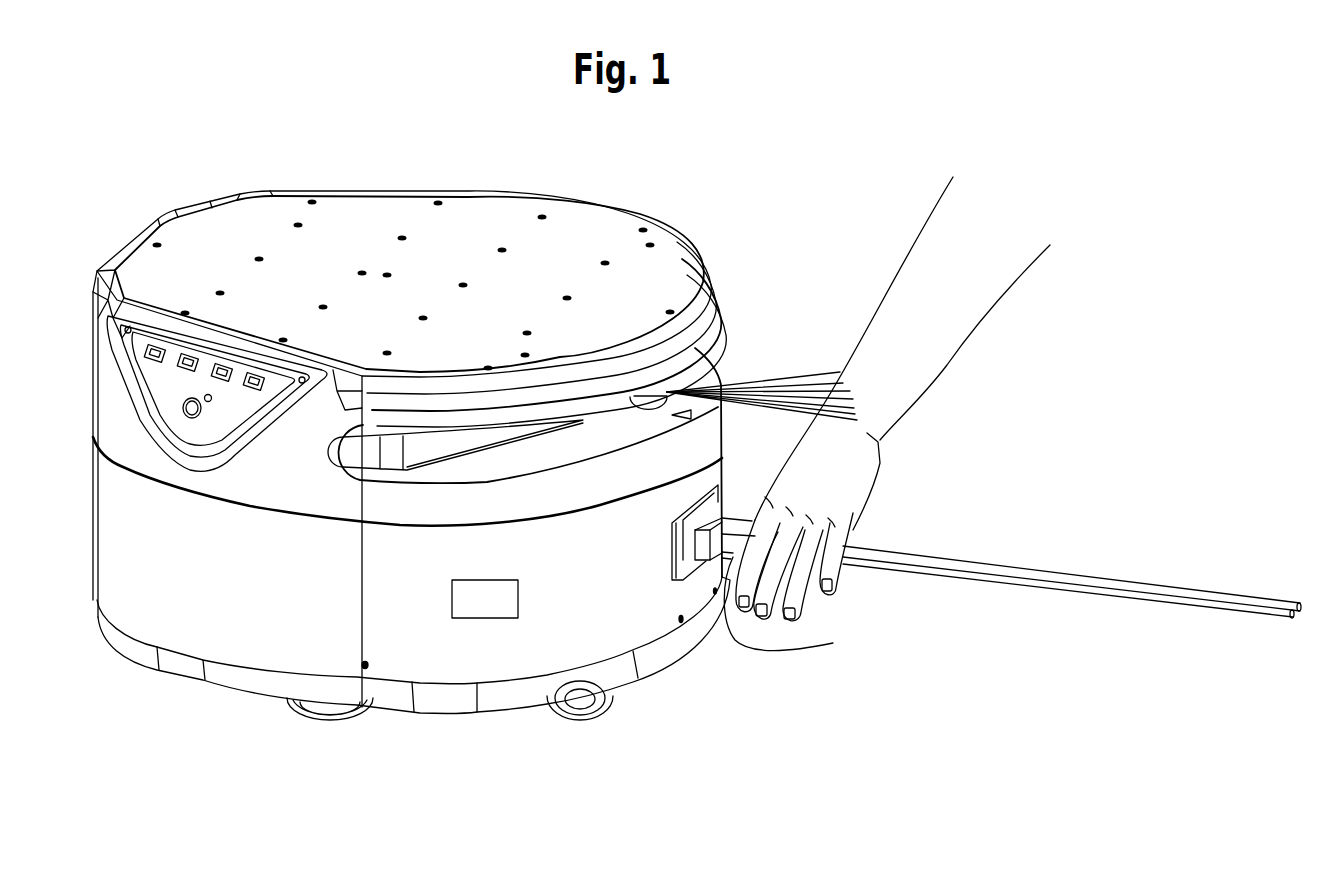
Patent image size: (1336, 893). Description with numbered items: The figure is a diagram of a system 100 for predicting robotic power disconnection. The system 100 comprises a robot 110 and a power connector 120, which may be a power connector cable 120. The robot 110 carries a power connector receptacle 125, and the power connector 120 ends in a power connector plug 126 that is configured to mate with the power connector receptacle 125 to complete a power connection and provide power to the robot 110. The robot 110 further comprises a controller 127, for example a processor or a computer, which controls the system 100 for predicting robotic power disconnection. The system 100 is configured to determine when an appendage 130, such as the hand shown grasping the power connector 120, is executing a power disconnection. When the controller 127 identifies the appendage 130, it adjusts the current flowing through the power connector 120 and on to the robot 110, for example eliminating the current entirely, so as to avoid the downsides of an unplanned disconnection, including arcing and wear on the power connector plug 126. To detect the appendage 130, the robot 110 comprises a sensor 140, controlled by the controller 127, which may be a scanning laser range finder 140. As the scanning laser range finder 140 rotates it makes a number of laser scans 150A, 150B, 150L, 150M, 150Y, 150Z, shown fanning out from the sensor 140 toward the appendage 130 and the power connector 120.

The system 100 is at (246, 712).
The robot 110 is at (470, 236).
The power connector 120 is at (833, 643).
The power connector receptacle 125 is at (663, 547).
The power connector plug 126 is at (707, 600).
The controller 127 is at (500, 610).
The appendage 130 is at (1020, 263).
The sensor 140 is at (657, 416).
The laser scan 150A is at (757, 382).
The laser scan 150B is at (770, 380).
The laser scan 150L is at (773, 365).
The laser scan 150M is at (787, 373).
The laser scan 150Y is at (807, 373).
The laser scan 150Z is at (820, 373).